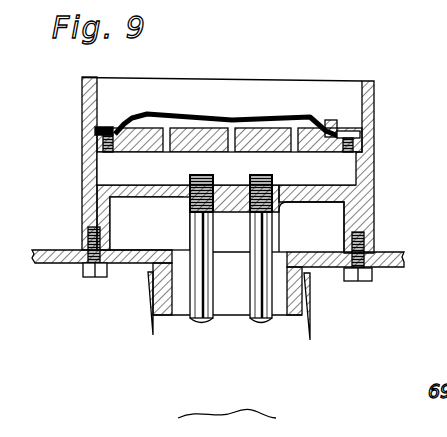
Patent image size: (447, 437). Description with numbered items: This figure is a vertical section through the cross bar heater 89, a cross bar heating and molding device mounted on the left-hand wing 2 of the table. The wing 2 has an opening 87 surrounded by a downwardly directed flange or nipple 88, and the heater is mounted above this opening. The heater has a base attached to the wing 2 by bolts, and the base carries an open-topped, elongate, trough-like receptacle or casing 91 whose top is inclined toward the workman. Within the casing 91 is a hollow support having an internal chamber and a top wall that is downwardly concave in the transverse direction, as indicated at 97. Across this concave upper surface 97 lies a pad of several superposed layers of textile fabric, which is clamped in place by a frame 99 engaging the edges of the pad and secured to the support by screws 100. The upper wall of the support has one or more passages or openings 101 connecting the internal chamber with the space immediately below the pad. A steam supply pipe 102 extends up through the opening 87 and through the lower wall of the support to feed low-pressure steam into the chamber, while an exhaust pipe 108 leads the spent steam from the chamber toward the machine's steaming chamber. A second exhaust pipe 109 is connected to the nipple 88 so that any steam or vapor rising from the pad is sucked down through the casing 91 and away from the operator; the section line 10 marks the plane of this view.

The section line 10 is at (231, 112).
The downwardly concave upper surface 97 is at (266, 130).
The frame 99 is at (331, 120).
The screws 100 is at (355, 132).
The receptacle or casing 91 is at (375, 110).
The cross bar heater 89 is at (391, 161).
The passages or openings 101 is at (167, 150).
The steam supply pipe 102 is at (200, 232).
The exhaust pipe 108 is at (271, 229).
The opening 87 is at (283, 257).
The left-hand wing 2 is at (387, 254).
The flange or nipple 88 is at (306, 294).
The exhaust pipe 109 is at (305, 357).